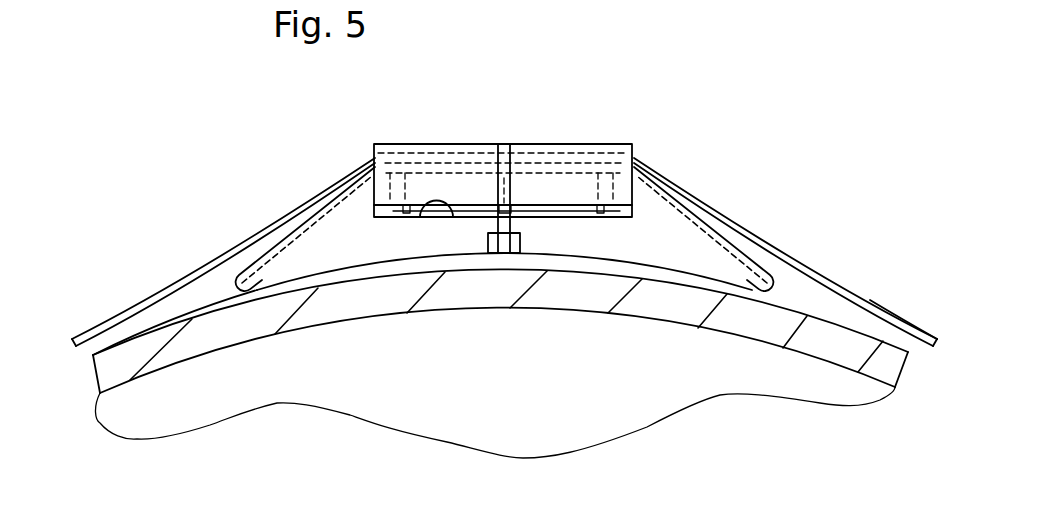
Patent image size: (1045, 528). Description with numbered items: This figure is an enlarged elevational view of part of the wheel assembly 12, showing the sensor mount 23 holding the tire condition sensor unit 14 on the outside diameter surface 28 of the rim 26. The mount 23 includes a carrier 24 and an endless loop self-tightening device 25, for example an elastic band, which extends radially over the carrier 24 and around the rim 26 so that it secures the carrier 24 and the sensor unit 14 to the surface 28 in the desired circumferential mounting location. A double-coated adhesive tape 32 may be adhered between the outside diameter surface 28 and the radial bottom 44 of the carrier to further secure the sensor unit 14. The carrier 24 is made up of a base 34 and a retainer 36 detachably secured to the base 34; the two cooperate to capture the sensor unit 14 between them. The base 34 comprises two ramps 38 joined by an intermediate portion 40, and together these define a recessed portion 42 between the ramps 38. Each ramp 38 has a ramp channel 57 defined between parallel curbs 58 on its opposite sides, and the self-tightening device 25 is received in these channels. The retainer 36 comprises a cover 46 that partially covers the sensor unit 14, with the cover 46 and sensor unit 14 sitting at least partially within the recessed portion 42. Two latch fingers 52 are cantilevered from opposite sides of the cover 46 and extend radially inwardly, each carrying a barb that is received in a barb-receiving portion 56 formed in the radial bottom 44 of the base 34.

The wheel assembly 12 is at (203, 178).
The tire condition sensor unit 14 is at (543, 185).
The sensor mount 23 is at (785, 215).
The carrier 24 is at (785, 215).
The self-tightening device 25 is at (787, 250).
The rim 26 is at (145, 340).
The outside diameter surface 28 is at (207, 320).
The double-coated adhesive tape 32 is at (872, 263).
The base 34 is at (697, 200).
The retainer 36 is at (655, 172).
The ramp 38 is at (290, 262).
The intermediate portion 40 is at (545, 237).
The recessed portion 42 is at (419, 218).
The radial bottom 44 is at (360, 270).
The cover 46 is at (438, 144).
The latch finger 52 is at (519, 180).
The barb-receiving portion 56 is at (507, 250).
The ramp channel 57 is at (324, 198).
The curb 58 is at (271, 240).